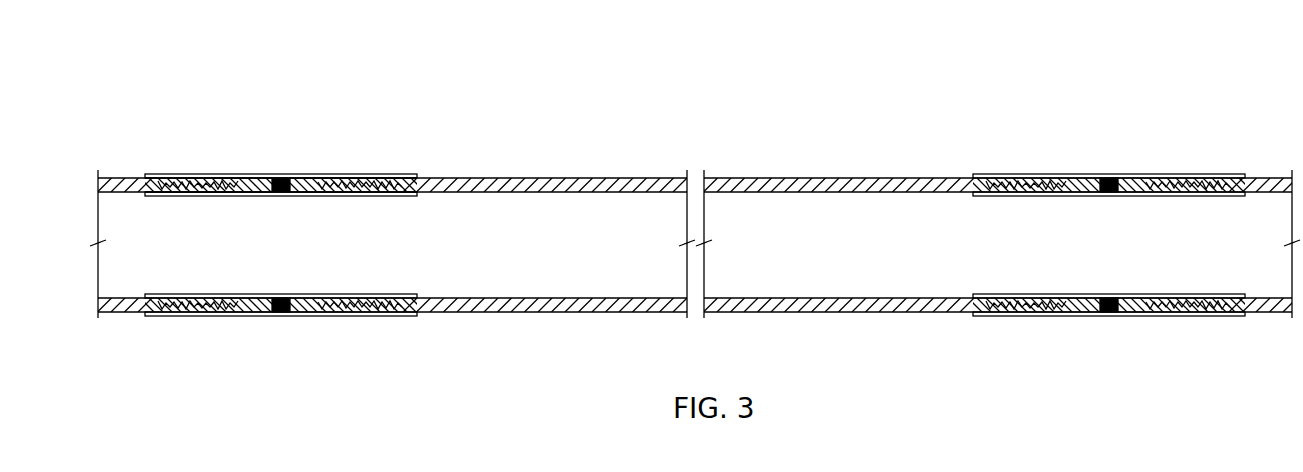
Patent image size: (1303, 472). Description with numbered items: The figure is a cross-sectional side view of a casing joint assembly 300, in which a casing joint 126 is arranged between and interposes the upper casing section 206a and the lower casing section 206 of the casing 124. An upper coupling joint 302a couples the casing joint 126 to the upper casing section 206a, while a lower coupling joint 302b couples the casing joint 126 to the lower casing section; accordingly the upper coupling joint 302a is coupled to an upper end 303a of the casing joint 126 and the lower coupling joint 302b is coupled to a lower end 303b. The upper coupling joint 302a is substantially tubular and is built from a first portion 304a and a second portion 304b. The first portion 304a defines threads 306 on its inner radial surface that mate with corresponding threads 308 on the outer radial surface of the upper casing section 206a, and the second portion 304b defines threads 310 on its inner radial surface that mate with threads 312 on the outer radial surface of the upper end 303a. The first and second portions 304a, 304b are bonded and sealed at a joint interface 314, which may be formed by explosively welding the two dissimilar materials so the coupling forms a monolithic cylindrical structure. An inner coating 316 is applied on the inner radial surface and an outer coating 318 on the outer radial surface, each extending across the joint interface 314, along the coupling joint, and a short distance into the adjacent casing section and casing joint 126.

The casing joint assembly 300 is at (178, 56).
The casing 124 is at (122, 314).
The casing joint 126 is at (772, 178).
The upper casing section 206a is at (108, 175).
The casing section 206 is at (1273, 175).
The upper coupling joint 302a is at (325, 171).
The lower coupling joint 302b is at (1068, 158).
The upper end 303a is at (377, 295).
The lower end 303b is at (1001, 296).
The first portion 304a is at (243, 196).
The second portion 304b is at (313, 196).
The threads 306 is at (181, 196).
The threads 308 is at (225, 175).
The threads 310 is at (367, 196).
The threads 312 is at (390, 174).
The joint interface 314 is at (283, 175).
The inner coating 316 is at (398, 195).
The outer coating 318 is at (168, 175).